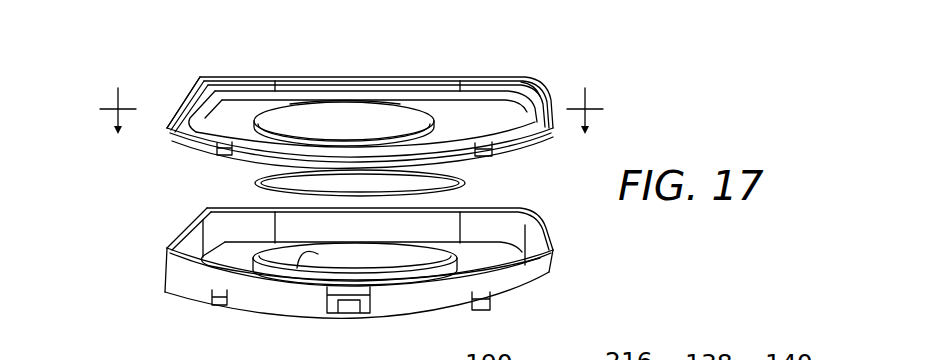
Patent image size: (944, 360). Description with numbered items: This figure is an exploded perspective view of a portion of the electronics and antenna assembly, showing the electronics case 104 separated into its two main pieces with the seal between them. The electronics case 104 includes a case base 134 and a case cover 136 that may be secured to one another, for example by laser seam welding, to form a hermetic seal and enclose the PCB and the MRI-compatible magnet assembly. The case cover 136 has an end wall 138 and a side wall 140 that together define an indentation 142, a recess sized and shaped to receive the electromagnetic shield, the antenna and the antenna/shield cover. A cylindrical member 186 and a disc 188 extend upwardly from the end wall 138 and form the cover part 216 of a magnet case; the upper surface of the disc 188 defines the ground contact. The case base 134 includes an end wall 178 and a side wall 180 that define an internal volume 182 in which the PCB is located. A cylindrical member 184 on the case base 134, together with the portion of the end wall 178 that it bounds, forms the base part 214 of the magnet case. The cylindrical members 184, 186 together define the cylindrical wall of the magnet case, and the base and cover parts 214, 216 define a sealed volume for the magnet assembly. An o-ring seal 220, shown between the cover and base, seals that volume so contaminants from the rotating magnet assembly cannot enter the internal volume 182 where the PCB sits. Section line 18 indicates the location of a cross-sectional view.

The section line 18- 18 is at (355, 111).
The electronics case 104 is at (372, 100).
The case cover 136 is at (373, 75).
The disc 188 is at (297, 112).
The cover part 216 is at (425, 102).
The end wall 138 is at (176, 130).
The indentation 142 is at (516, 127).
The side wall 140 is at (521, 82).
The cylindrical member 186 is at (247, 135).
The o-ring seal 220 is at (462, 183).
The case base 134 is at (348, 263).
The side wall 180 is at (174, 279).
The end wall 178 is at (228, 253).
The internal volume 182 is at (507, 256).
The cylindrical member 184 is at (262, 270).
The base part 214 is at (314, 257).